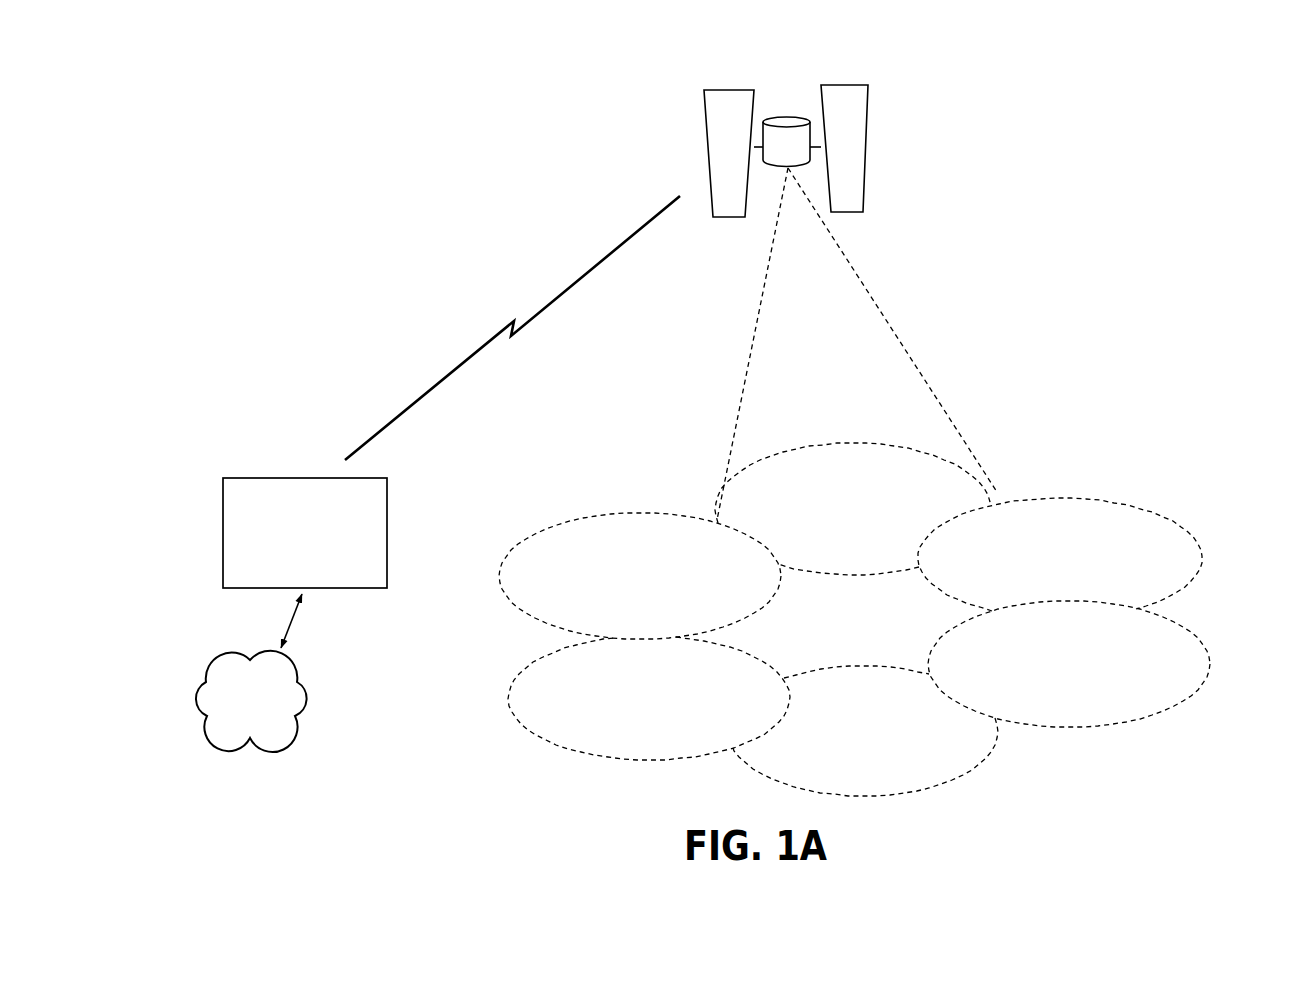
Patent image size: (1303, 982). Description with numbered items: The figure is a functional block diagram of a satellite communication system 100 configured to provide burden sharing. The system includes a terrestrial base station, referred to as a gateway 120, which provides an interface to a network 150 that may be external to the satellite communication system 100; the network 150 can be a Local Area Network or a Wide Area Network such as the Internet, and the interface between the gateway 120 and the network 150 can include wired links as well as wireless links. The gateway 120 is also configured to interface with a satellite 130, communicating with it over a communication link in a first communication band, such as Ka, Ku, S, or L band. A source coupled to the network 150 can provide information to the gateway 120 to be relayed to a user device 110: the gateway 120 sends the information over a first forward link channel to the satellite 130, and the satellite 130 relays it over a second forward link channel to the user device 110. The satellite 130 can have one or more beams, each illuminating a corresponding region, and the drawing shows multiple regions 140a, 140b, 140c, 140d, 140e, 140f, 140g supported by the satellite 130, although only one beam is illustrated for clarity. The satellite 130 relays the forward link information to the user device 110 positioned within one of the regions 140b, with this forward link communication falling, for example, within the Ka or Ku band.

The satellite communication system 100 is at (1168, 78).
The user device 110 is at (917, 492).
The gateway 120 is at (239, 473).
The satellite 130 is at (881, 106).
The network 150 is at (326, 697).
The region 140a is at (892, 623).
The region 140b is at (1072, 524).
The region 140c is at (1185, 529).
The region 140d is at (1245, 638).
The region 140e is at (1023, 778).
The region 140f is at (506, 686).
The region 140g is at (610, 512).